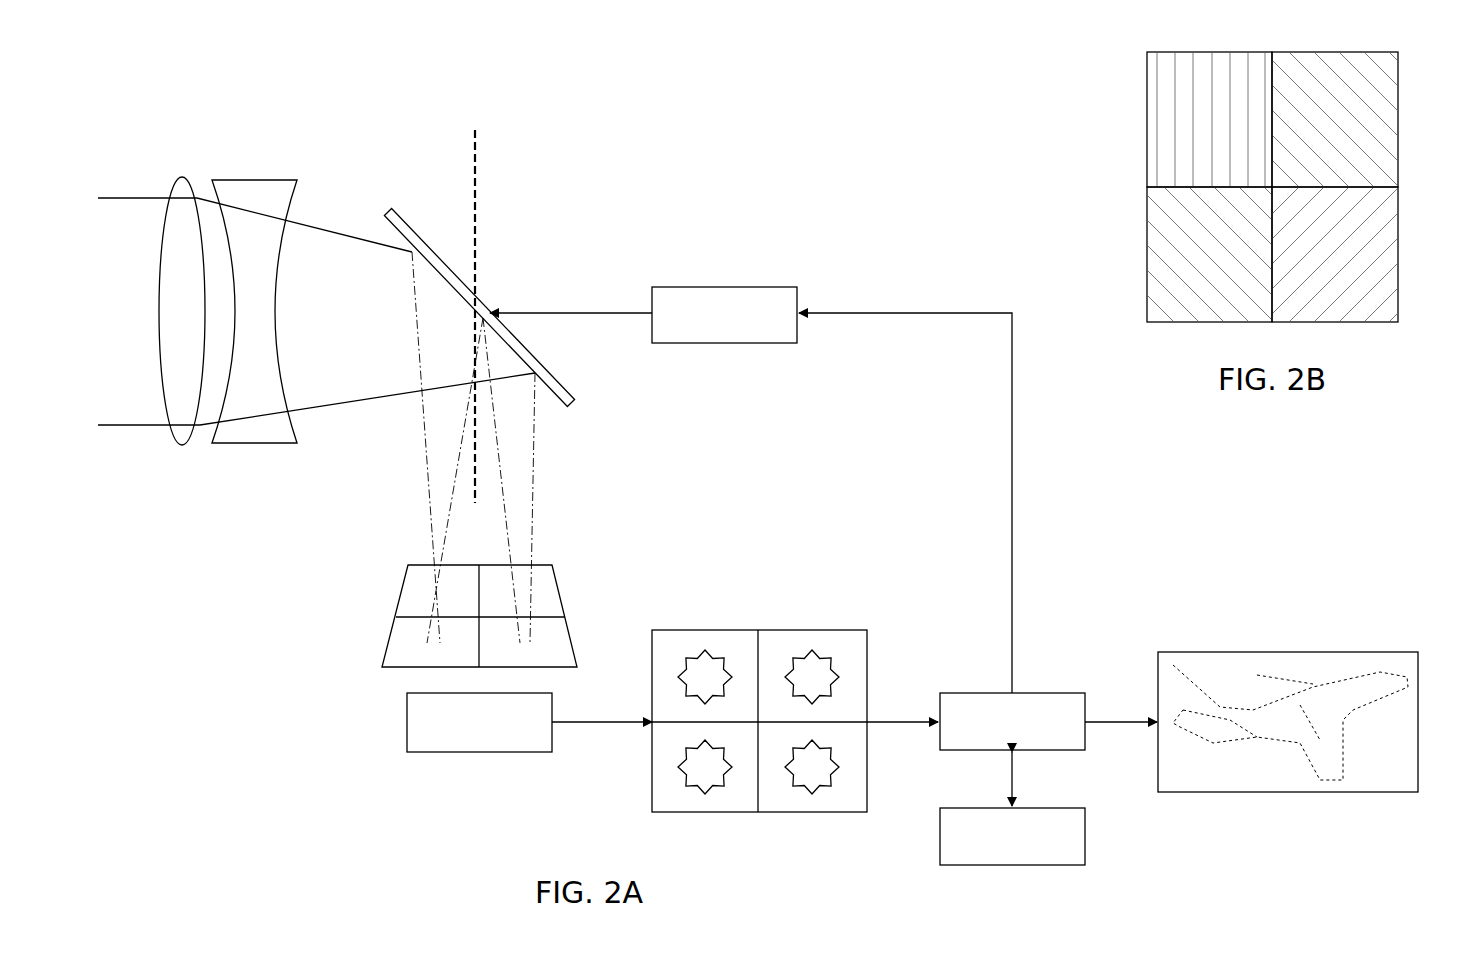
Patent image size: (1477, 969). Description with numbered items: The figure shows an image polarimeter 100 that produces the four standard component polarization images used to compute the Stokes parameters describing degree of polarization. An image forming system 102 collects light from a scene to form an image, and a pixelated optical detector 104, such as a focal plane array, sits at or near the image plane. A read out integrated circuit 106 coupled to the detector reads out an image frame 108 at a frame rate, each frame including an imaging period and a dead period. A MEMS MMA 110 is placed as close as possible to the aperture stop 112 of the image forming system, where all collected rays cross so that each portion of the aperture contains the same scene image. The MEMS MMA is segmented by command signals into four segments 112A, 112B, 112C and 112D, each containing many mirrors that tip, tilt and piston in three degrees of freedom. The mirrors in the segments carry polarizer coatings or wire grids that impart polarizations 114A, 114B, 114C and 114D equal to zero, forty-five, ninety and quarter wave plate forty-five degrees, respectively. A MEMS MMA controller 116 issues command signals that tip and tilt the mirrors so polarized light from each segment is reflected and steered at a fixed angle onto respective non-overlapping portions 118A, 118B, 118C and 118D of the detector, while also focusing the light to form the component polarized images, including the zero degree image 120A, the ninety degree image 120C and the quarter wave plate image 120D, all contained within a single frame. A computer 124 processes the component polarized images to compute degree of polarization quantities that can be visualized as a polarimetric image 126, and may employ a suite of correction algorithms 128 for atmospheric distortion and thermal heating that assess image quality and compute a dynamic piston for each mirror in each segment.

In FIG. 2A, the image polarimeter 100 is at (172, 122).
In FIG. 2A, the image forming system 102 is at (228, 163).
In FIG. 2A, the pixelated optical detector 104 is at (393, 683).
In FIG. 2A, the read out integrated circuit 106 is at (478, 753).
In FIG. 2A, the image frame 108 is at (792, 617).
In FIG. 2A, the MEMS MMA 110 is at (530, 348).
In FIG. 2A, the aperture stop 112 is at (478, 175).
In FIG. 2A, the MEMS MMA controller 116 is at (727, 285).
In FIG. 2A, the portion of FPA 118A is at (400, 588).
In FIG. 2A, the portion of FPA 118B is at (560, 590).
In FIG. 2A, the portion of FPA 118C is at (388, 638).
In FIG. 2A, the portion of FPA 118D is at (570, 640).
In FIG. 2A, the component polarized image 120A is at (693, 677).
In FIG. 2A, the component polarized image 120C is at (823, 677).
In FIG. 2A, the component polarized image 120D is at (823, 767).
In FIG. 2A, the computer 124 is at (1030, 692).
In FIG. 2A, the polarimetric image 126 is at (1292, 650).
In FIG. 2A, the correction algorithms 128 is at (1028, 807).
In FIG. 2B, the segment 112A is at (1145, 118).
In FIG. 2B, the segment 112B is at (1400, 118).
In FIG. 2B, the segment 112C is at (1145, 253).
In FIG. 2B, the segment 112D is at (1400, 253).
In FIG. 2B, the polarization P0 114A is at (1197, 103).
In FIG. 2B, the polarization P1 114B is at (1347, 135).
In FIG. 2B, the polarization P2 114C is at (1198, 240).
In FIG. 2B, the polarization P3 114D is at (1345, 270).